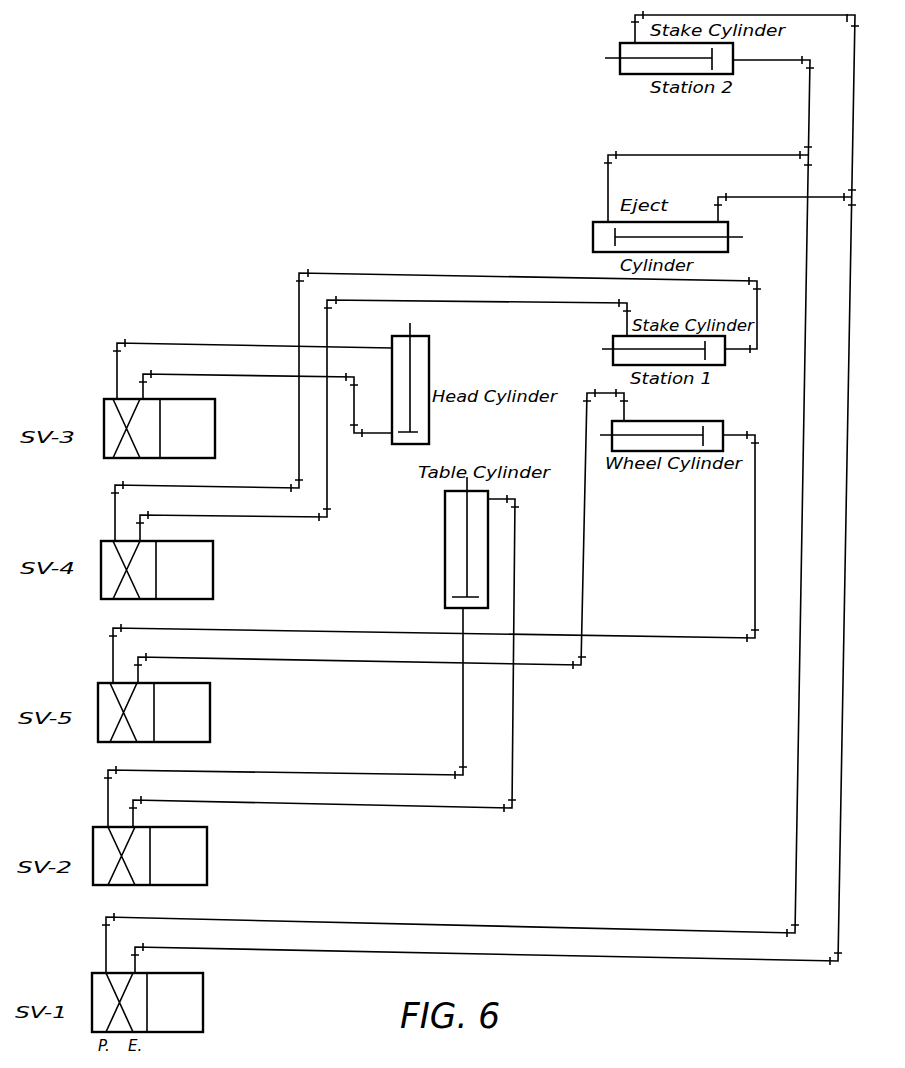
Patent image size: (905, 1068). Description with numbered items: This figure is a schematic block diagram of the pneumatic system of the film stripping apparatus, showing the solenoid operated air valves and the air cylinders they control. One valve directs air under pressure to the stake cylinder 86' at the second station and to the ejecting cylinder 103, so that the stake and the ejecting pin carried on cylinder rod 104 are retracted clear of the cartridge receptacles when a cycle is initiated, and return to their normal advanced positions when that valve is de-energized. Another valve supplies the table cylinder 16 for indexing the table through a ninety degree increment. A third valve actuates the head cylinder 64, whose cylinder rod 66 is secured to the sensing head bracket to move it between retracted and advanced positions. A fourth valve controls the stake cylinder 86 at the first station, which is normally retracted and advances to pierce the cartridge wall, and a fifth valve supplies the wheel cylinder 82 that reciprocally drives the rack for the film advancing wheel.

The air cylinder 86' is at (643, 64).
The air cylinder 103 is at (592, 236).
The cylinder rod 104 is at (737, 240).
The air cylinder 64 is at (392, 336).
The cylinder rod 66 is at (415, 332).
The table cylinder 16 is at (445, 512).
The air cylinder 86 is at (649, 340).
The air cylinder 82 is at (710, 421).